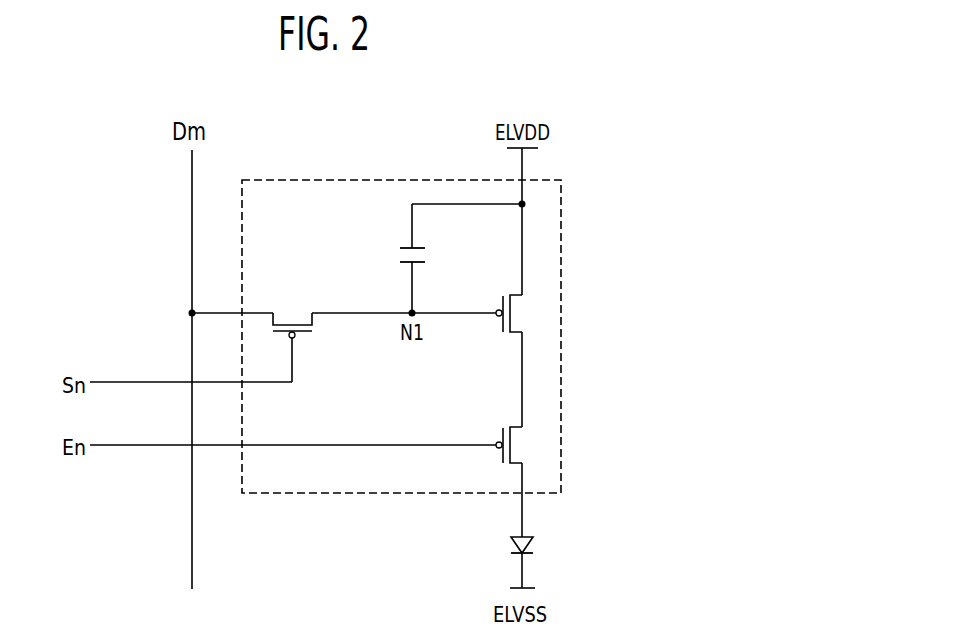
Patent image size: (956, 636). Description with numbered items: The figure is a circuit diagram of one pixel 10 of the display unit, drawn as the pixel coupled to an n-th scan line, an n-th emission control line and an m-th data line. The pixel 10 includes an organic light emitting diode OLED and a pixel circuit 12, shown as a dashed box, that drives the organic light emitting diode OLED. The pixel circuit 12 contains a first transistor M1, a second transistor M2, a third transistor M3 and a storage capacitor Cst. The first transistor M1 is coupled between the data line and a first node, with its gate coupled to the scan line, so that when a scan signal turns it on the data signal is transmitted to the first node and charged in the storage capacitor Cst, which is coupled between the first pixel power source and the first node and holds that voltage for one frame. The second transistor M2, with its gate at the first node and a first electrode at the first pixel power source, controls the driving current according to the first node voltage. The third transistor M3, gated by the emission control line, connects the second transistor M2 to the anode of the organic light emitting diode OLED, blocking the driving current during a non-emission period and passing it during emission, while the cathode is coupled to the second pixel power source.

The pixel 10 is at (592, 132).
The pixel circuit 12 is at (561, 338).
The first transistor M1 is at (292, 334).
The second transistor M2 is at (522, 313).
The third transistor M3 is at (522, 445).
The storage capacitor Cst is at (442, 258).
The organic light emitting diode OLED is at (548, 562).